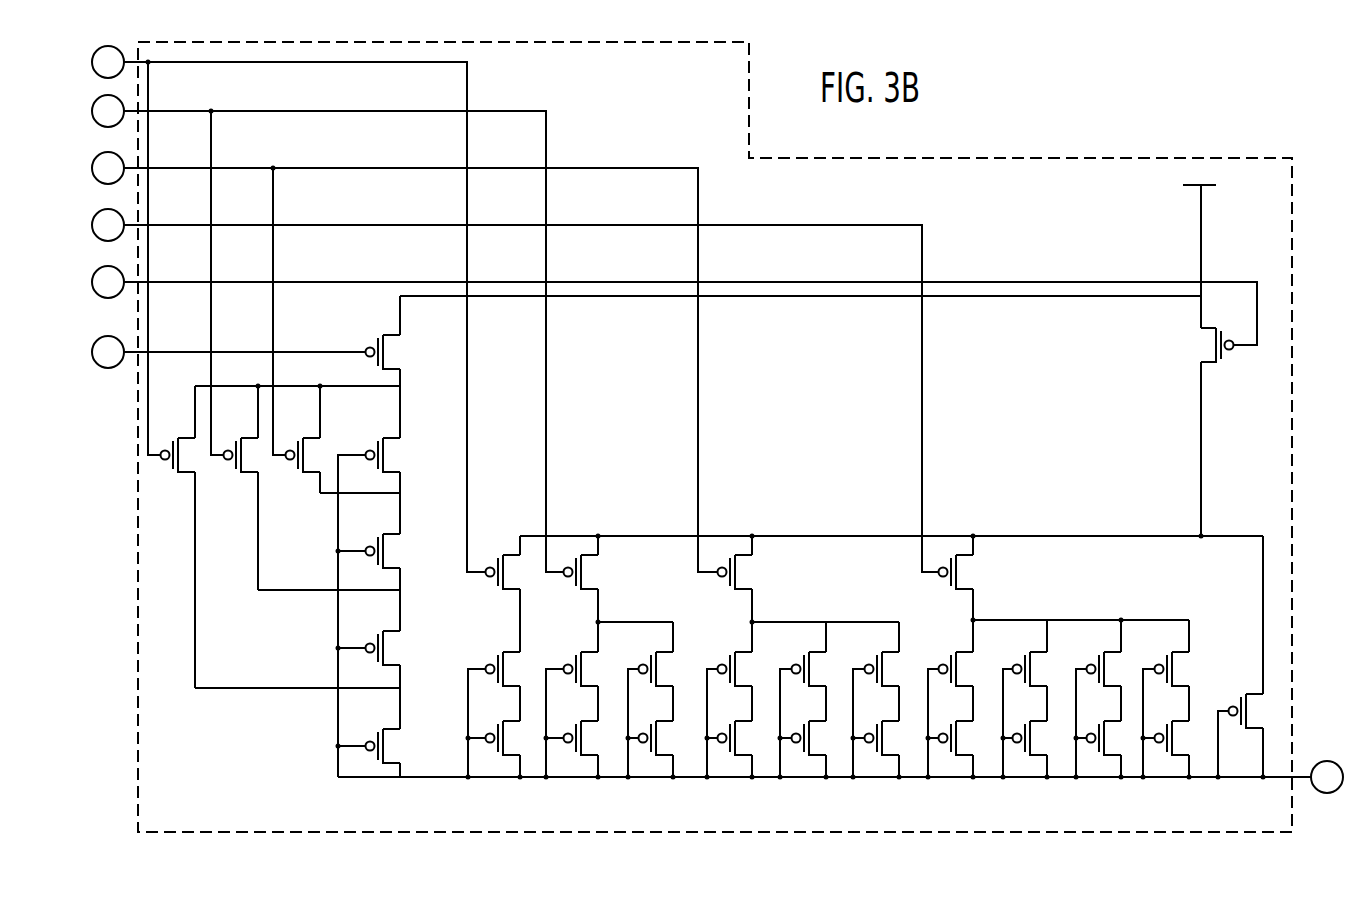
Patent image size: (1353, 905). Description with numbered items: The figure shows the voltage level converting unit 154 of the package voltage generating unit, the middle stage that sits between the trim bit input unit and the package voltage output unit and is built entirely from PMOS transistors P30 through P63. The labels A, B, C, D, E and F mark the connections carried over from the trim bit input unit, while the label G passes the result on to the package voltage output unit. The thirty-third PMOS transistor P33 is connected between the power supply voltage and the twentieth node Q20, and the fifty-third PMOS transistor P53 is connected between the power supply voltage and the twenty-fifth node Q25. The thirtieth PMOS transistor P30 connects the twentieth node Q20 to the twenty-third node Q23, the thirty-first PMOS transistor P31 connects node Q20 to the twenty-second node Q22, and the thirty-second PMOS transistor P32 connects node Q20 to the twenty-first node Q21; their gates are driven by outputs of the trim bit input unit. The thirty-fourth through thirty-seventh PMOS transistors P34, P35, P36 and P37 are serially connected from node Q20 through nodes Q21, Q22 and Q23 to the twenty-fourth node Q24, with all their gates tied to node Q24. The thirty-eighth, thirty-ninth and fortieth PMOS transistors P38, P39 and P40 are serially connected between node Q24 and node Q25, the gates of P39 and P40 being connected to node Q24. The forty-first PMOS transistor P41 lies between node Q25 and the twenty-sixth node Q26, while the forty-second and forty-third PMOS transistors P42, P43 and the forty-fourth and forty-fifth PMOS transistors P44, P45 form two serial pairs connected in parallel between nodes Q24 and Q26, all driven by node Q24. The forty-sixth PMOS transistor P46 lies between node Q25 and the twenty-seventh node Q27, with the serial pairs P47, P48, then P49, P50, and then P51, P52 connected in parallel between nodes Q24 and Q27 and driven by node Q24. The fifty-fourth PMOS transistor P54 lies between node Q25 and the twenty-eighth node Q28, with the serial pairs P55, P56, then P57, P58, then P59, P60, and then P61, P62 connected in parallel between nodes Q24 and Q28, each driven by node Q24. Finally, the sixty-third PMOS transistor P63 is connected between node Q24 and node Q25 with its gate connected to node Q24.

The voltage level converting unit 154 is at (1113, 158).
The thirtieth PMOS transistor P30 is at (178, 537).
The thirty-first PMOS transistor P31 is at (241, 488).
The thirty-second PMOS transistor P32 is at (303, 447).
The thirty-third PMOS transistor P33 is at (383, 341).
The thirty-fourth PMOS transistor P34 is at (369, 581).
The thirty-fifth PMOS transistor P35 is at (368, 541).
The thirty-sixth PMOS transistor P36 is at (368, 639).
The thirty-seventh PMOS transistor P37 is at (368, 732).
The thirty-eighth PMOS transistor P38 is at (512, 594).
The thirty-ninth PMOS transistor P39 is at (502, 714).
The fortieth PMOS transistor P40 is at (502, 749).
The forty-first PMOS transistor P41 is at (590, 578).
The forty-second PMOS transistor P42 is at (580, 699).
The forty-third PMOS transistor P43 is at (580, 749).
The forty-fourth PMOS transistor P44 is at (658, 699).
The forty-fifth PMOS transistor P45 is at (659, 749).
The forty-sixth PMOS transistor P46 is at (744, 578).
The forty-seventh PMOS transistor P47 is at (737, 699).
The forty-eighth PMOS transistor P48 is at (738, 749).
The forty-ninth PMOS transistor P49 is at (811, 699).
The fiftieth PMOS transistor P50 is at (811, 749).
The fifty-first PMOS transistor P51 is at (884, 699).
The fifty-second PMOS transistor P52 is at (884, 749).
The fifty-third PMOS transistor P53 is at (1205, 360).
The fifty-fourth PMOS transistor P54 is at (965, 577).
The fifty-fifth PMOS transistor P55 is at (958, 698).
The fifty-sixth PMOS transistor P56 is at (959, 749).
The fifty-seventh PMOS transistor P57 is at (1033, 698).
The fifty-eighth PMOS transistor P58 is at (1033, 749).
The fifty-ninth PMOS transistor P59 is at (1106, 698).
The sixtieth PMOS transistor P60 is at (1107, 749).
The sixty-first PMOS transistor P61 is at (1174, 698).
The sixty-second PMOS transistor P62 is at (1174, 749).
The sixty-third PMOS transistor P63 is at (1249, 656).
The twentieth node Q20 is at (400, 386).
The twenty-first node Q21 is at (400, 493).
The twenty-second node Q22 is at (400, 590).
The twenty-third node Q23 is at (400, 688).
The twenty-fourth node Q24 is at (707, 777).
The twenty-fifth node Q25 is at (1201, 536).
The twenty-sixth node Q26 is at (598, 622).
The twenty-seventh node Q27 is at (825, 622).
The twenty-eighth node Q28 is at (1047, 620).
The connection label A is at (288, 309).
The connection label B is at (327, 333).
The connection label C is at (404, 362).
The connection label D is at (515, 390).
The connection label E is at (674, 305).
The connection label F is at (228, 352).
The connection label G is at (1303, 777).